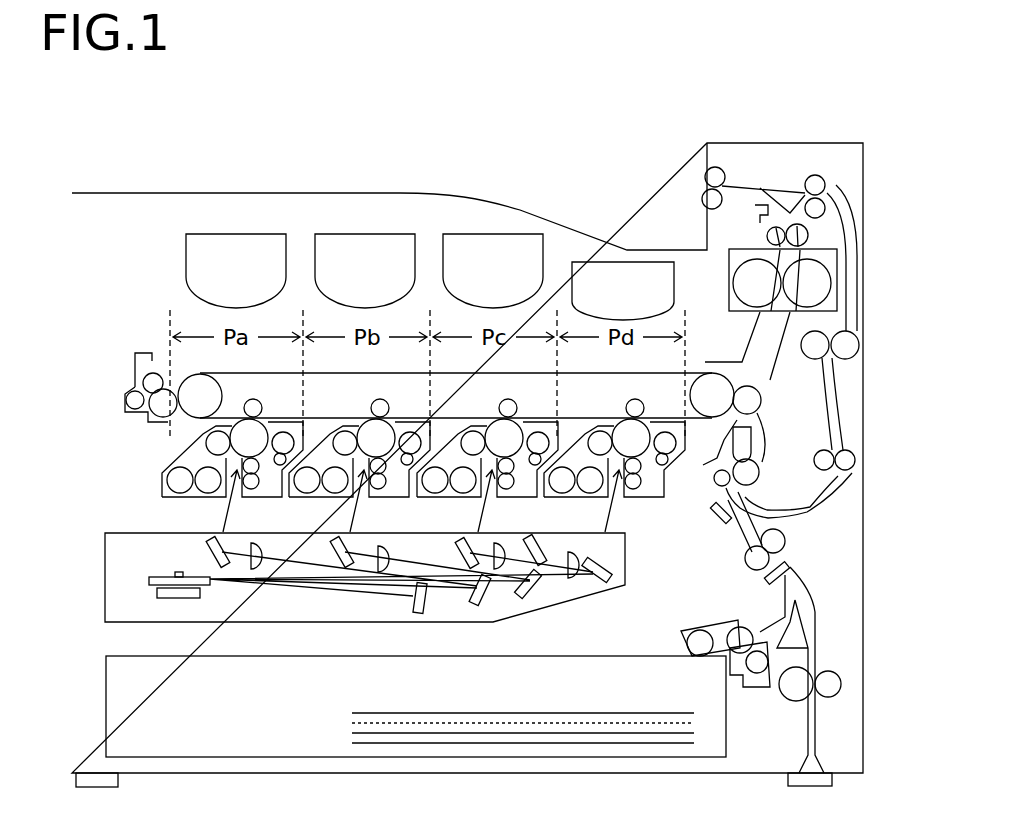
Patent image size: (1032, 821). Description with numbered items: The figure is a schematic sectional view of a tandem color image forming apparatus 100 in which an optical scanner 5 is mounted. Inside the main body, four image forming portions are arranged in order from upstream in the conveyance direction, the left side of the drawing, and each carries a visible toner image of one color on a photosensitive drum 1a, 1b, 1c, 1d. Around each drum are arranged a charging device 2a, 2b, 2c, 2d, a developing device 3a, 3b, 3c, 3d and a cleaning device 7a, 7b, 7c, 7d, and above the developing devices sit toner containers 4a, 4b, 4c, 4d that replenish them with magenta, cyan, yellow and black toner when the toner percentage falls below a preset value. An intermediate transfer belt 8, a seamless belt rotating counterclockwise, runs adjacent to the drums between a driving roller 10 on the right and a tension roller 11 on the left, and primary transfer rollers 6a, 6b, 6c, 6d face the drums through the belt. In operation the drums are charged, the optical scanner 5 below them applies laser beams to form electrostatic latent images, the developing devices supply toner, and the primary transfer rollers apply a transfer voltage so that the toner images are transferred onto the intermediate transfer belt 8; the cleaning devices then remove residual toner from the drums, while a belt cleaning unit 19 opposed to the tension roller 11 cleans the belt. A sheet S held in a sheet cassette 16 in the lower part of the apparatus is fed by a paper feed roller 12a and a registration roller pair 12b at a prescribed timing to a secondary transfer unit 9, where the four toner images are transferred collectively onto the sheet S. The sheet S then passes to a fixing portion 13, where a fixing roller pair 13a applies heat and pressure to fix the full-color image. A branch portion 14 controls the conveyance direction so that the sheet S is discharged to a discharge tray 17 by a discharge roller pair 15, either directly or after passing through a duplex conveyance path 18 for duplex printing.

The image forming apparatus 100 is at (196, 152).
The photosensitive drum 1a is at (249, 438).
The photosensitive drum 1b is at (376, 438).
The photosensitive drum 1c is at (504, 438).
The photosensitive drum 1d is at (631, 438).
The charging device 2a is at (252, 483).
The charging device 2b is at (379, 483).
The charging device 2c is at (507, 483).
The charging device 2d is at (634, 483).
The developing device 3a is at (162, 484).
The developing device 3b is at (338, 433).
The developing device 3c is at (468, 433).
The developing device 3d is at (592, 433).
The toner container 4a is at (236, 271).
The toner container 4b is at (365, 271).
The toner container 4c is at (493, 271).
The toner container 4d is at (623, 291).
The optical scanner 5 is at (105, 578).
The primary transfer roller 6a is at (256, 404).
The primary transfer roller 6b is at (383, 404).
The primary transfer roller 6c is at (511, 404).
The primary transfer roller 6d is at (638, 404).
The cleaning device 7a is at (286, 450).
The cleaning device 7b is at (413, 450).
The cleaning device 7c is at (541, 450).
The cleaning device 7d is at (668, 450).
The intermediate transfer belt 8 is at (225, 372).
The secondary transfer unit 9 is at (779, 402).
The driving roller 10 is at (712, 374).
The tension roller 11 is at (190, 420).
The paper feed roller 12a is at (700, 640).
The registration roller pair 12b is at (718, 513).
The fixing portion 13 is at (838, 268).
The fixing roller pair 13a is at (822, 284).
The branch portion 14 is at (835, 185).
The discharge roller pair 15 is at (705, 183).
The sheet cassette 16 is at (105, 700).
The discharge tray 17 is at (557, 215).
The duplex conveyance path 18 is at (845, 412).
The belt cleaning unit 19 is at (133, 386).
The sheet S is at (440, 712).